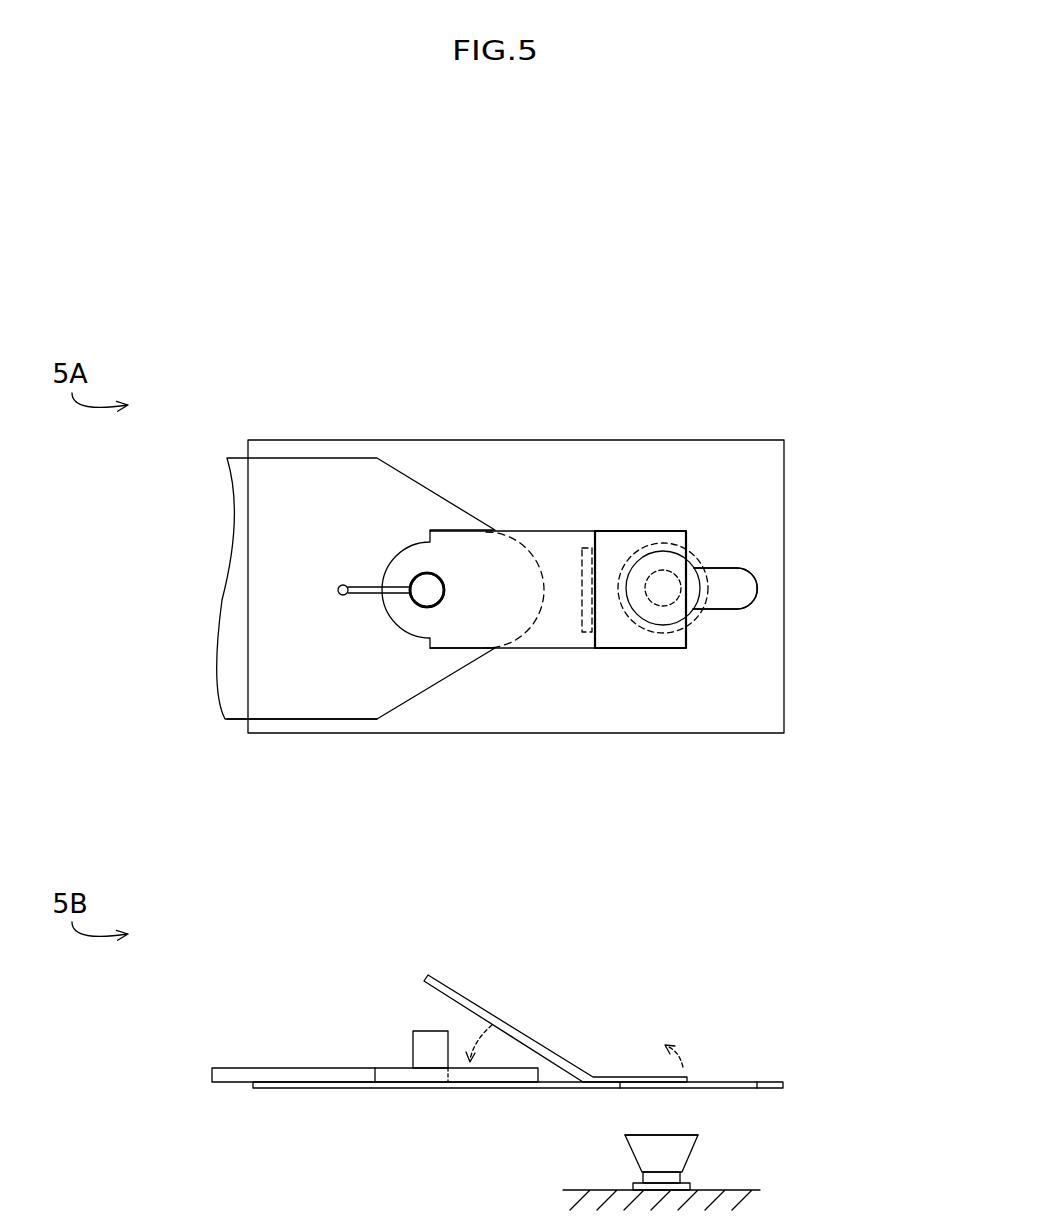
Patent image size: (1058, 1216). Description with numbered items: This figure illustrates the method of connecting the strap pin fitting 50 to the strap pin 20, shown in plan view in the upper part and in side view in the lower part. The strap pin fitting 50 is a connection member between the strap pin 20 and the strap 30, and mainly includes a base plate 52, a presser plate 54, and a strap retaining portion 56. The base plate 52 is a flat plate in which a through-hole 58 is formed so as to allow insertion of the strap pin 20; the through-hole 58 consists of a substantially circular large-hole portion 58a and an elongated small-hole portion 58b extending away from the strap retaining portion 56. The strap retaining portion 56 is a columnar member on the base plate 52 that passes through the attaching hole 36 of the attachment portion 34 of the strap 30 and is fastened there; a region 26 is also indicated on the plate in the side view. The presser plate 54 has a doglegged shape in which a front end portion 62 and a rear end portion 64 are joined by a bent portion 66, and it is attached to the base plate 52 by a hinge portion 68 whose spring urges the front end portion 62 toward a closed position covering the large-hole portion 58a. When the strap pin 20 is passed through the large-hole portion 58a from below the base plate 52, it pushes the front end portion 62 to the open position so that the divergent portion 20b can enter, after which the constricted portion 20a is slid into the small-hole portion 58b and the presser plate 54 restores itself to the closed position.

The strap pin 20 is at (708, 576).
The constricted portion 20a is at (644, 585).
The divergent portion 20b is at (662, 548).
The opening 26 is at (417, 1075).
The strap 30 is at (204, 592).
The attachment portion 34 is at (271, 708).
The attaching hole 36 is at (426, 574).
The strap pin fitting 50 is at (705, 364).
The base plate 52 is at (285, 448).
The presser plate 54 is at (475, 792).
The strap retaining portion 56 is at (427, 597).
The through-hole 58 is at (893, 555).
The large-hole portion 58a is at (692, 610).
The small-hole portion 58b is at (757, 586).
The front end portion 62 is at (643, 640).
The rear end portion 64 is at (502, 640).
The bent portion 66 is at (594, 640).
The hinge portion 68 is at (585, 568).